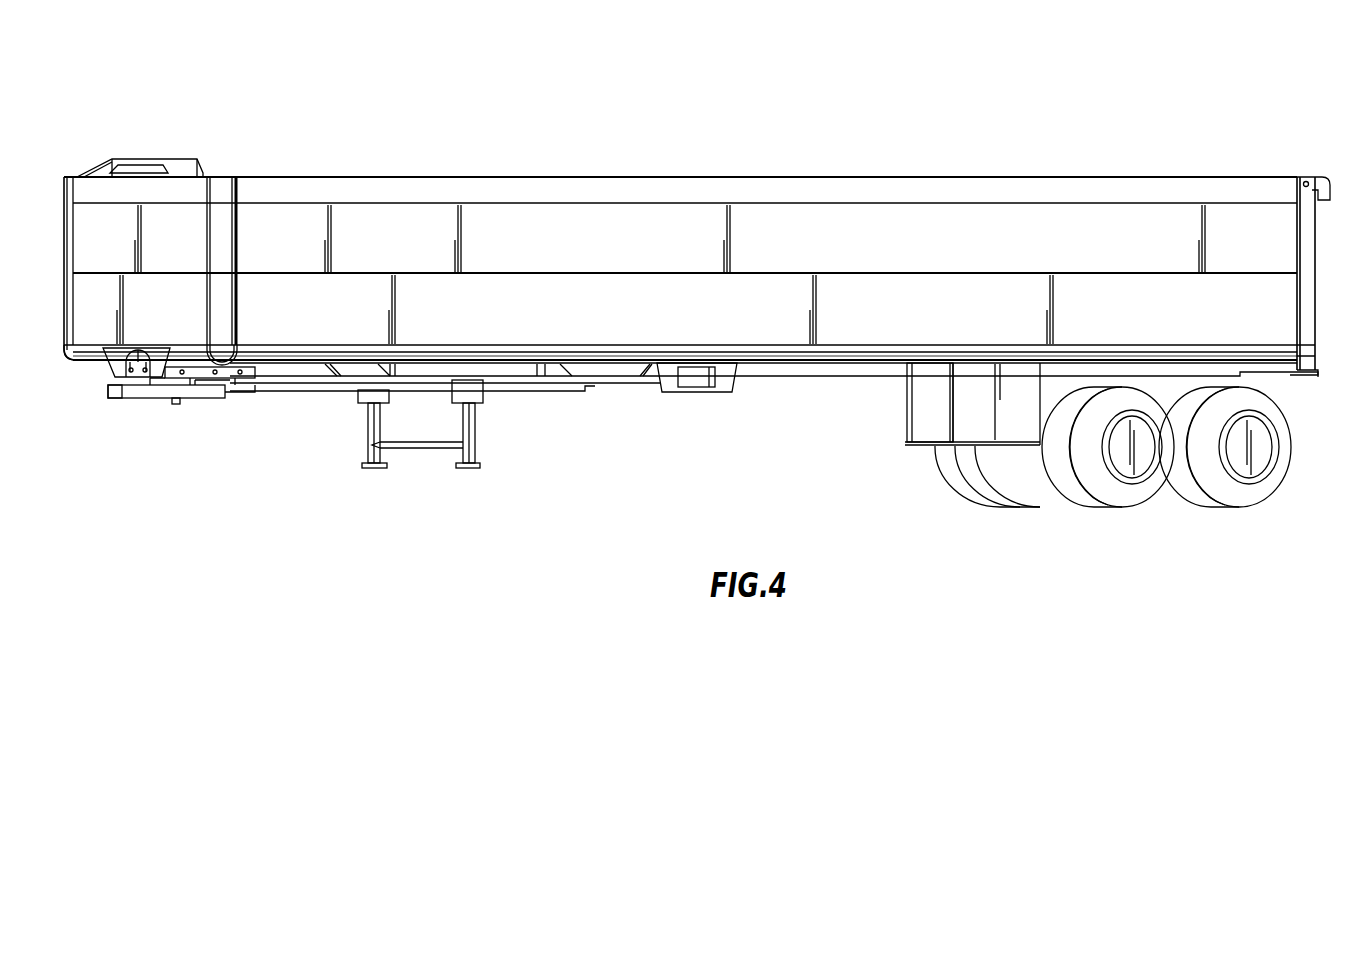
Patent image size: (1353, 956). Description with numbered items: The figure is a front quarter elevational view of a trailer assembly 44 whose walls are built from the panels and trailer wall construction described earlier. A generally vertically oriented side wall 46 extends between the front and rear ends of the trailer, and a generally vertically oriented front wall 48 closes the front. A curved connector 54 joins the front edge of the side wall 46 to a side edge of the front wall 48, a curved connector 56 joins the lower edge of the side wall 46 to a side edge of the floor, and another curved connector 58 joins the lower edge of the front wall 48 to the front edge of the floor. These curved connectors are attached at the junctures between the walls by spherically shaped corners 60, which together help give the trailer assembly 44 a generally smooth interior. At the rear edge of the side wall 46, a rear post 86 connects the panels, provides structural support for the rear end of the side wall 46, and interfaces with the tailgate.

The trailer assembly 44 is at (240, 484).
The side wall 46 is at (645, 177).
The front wall 48 is at (112, 160).
The curved connector 54 is at (64, 187).
The curved connector 56 is at (692, 345).
The curved connector 58 is at (82, 345).
The spherically shaped corner 60 is at (238, 350).
The rear post 86 is at (1297, 212).